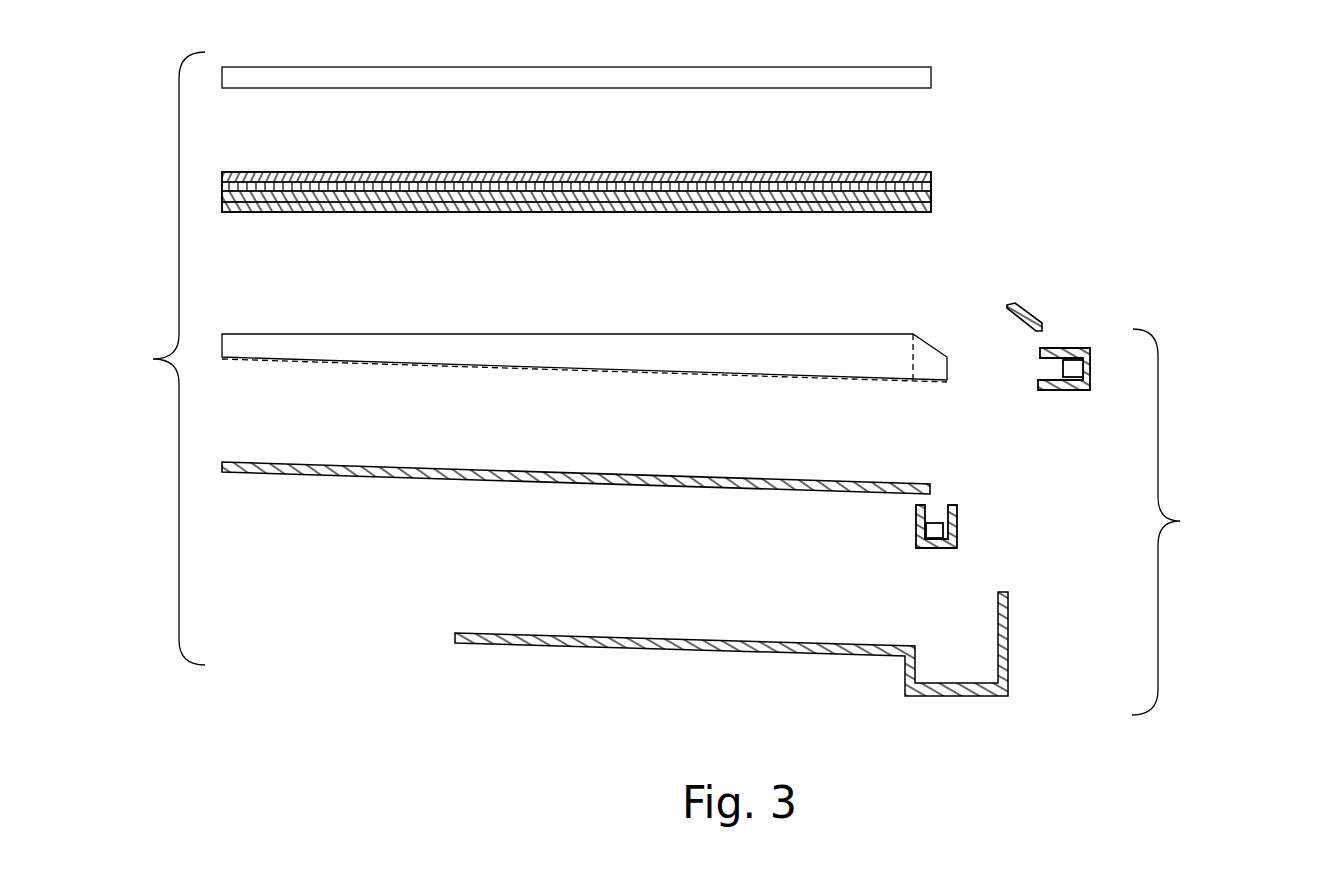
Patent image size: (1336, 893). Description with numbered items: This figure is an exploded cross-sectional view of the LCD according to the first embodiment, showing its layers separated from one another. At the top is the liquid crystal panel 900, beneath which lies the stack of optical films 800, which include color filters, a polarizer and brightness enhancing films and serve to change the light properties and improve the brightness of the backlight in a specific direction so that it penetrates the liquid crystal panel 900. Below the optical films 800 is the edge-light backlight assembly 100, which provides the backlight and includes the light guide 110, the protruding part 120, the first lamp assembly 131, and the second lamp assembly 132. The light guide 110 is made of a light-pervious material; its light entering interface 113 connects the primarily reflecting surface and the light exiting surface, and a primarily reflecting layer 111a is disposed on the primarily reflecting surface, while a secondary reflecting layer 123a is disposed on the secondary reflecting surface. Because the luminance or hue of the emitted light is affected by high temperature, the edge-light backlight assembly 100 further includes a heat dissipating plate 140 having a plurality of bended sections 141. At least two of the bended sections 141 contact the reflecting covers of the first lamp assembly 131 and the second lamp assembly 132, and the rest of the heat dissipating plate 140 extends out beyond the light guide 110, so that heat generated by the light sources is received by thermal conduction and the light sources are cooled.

The edge-light backlight assembly 100 is at (1194, 522).
The liquid crystal panel 900 is at (934, 76).
The optical films 800 is at (933, 194).
The protruding part 120 is at (930, 360).
The light guide 110 is at (647, 358).
The light entering interface 113 is at (913, 357).
The primarily reflecting layer 111a is at (672, 483).
The secondary reflecting layer 123a is at (1032, 312).
The first lamp assembly 131 is at (1075, 332).
The second lamp assembly 132 is at (915, 570).
The heat dissipating plate 140 is at (770, 663).
The bended sections 141 is at (1009, 648).